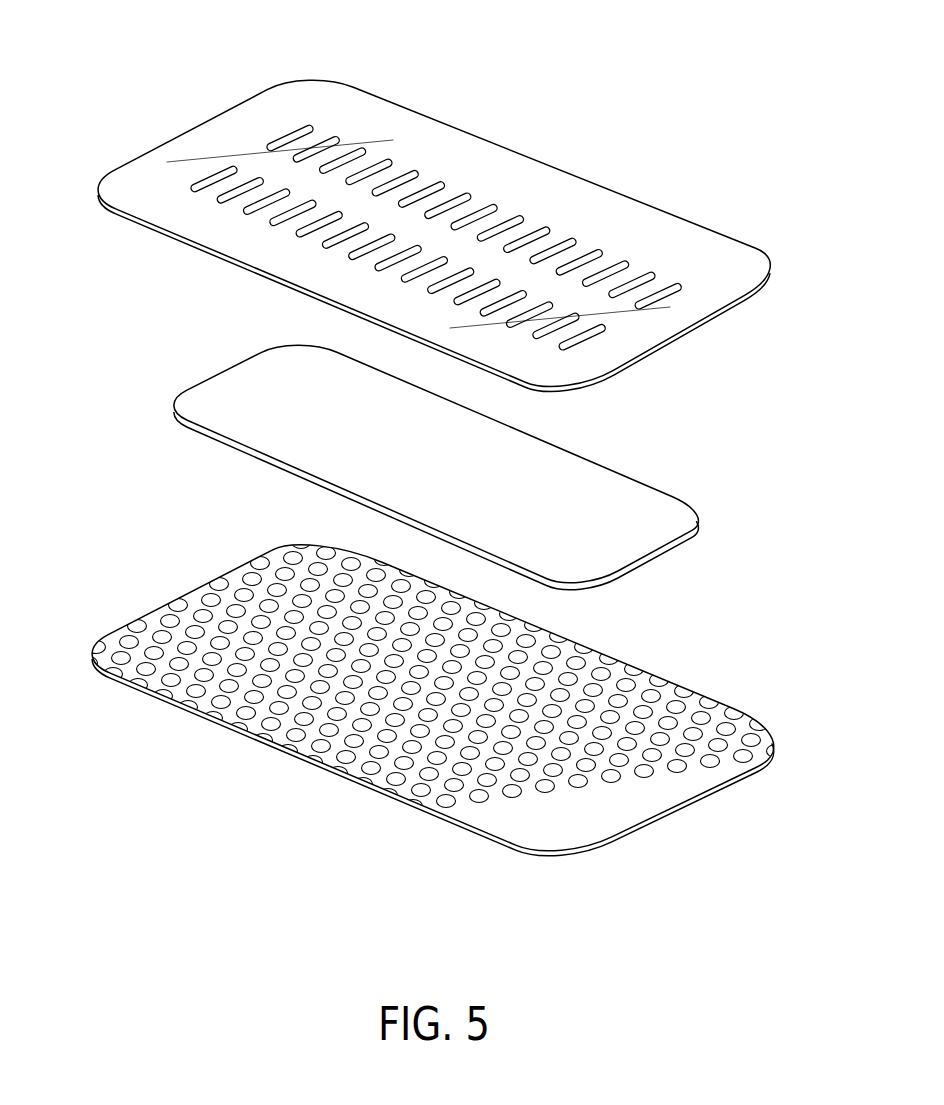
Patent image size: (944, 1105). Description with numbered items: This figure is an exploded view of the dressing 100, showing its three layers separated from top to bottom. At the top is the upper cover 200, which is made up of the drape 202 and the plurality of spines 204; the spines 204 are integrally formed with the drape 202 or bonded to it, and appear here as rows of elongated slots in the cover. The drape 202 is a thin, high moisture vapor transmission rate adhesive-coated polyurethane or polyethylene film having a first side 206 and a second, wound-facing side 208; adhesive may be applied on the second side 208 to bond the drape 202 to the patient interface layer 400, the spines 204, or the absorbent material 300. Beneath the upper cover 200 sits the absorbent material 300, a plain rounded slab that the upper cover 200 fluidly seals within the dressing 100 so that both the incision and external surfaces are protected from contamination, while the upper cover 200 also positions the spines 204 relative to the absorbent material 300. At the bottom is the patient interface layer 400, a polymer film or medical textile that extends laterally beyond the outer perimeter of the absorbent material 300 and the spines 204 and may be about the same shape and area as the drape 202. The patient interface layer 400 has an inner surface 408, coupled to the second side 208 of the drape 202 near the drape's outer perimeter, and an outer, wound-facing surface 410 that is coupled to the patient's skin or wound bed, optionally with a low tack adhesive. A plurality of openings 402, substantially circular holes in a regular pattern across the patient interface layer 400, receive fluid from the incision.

The dressing 100 is at (807, 52).
The upper cover 200 is at (138, 128).
The drape 202 is at (150, 187).
The spines 204 is at (295, 130).
The first side 206 is at (653, 222).
The second side 208 is at (707, 326).
The absorbent material 300 is at (198, 356).
The patient interface layer 400 is at (159, 574).
The openings 402 is at (247, 578).
The inner surface 408 is at (688, 702).
The outer surface 410 is at (677, 810).